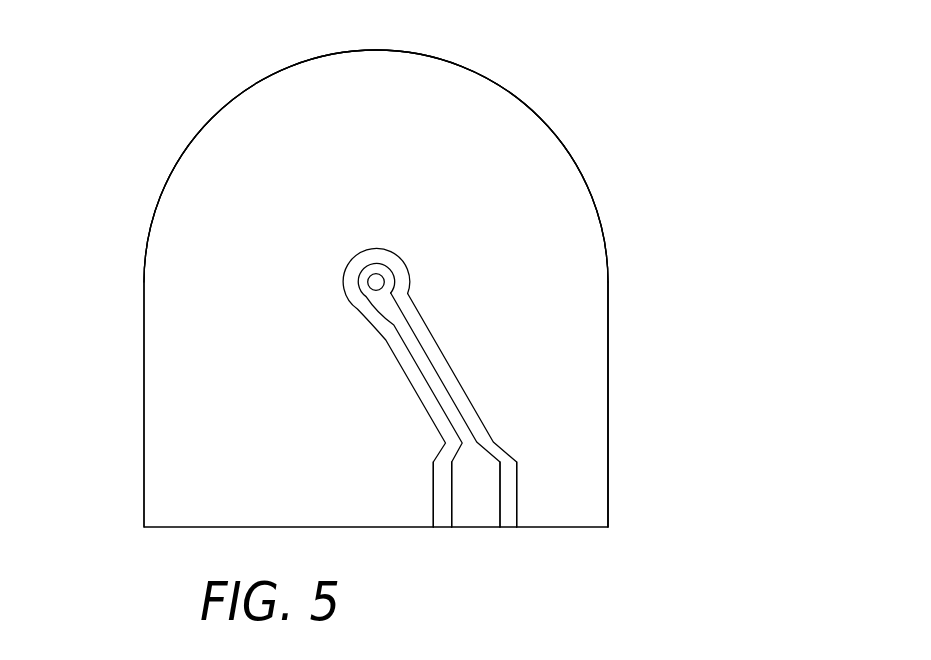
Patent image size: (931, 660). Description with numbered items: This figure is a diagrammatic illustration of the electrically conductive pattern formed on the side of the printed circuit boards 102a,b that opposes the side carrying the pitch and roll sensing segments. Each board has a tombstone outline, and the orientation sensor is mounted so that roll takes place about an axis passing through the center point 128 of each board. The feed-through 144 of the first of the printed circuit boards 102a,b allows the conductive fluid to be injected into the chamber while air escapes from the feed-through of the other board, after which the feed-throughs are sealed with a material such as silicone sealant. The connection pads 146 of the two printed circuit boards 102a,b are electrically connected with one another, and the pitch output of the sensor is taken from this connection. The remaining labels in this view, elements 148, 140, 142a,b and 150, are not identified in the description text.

The cap housing 148 is at (297, 90).
The printed circuit boards 102a,b is at (543, 120).
The cap 140 is at (537, 178).
The cap side wall 142a,b is at (577, 207).
The center point 128 is at (376, 282).
The feed-through 144 is at (372, 282).
The connection pads 146 is at (448, 392).
The lead terminals 150 is at (508, 518).